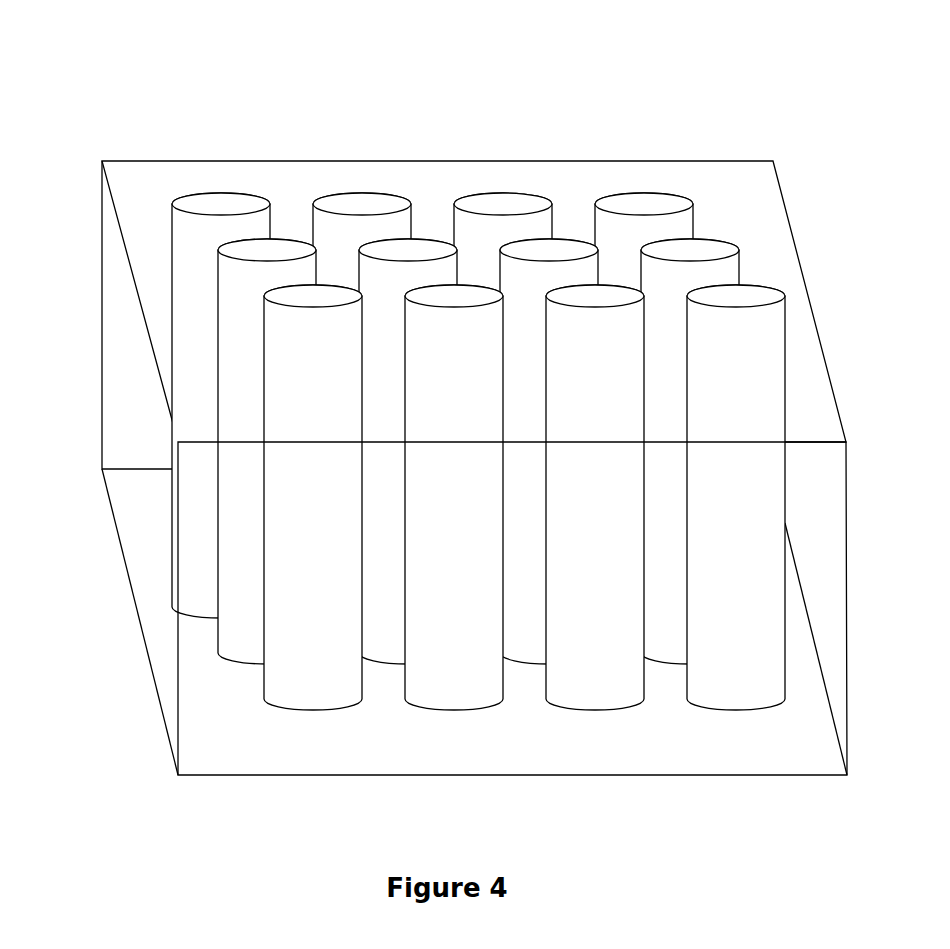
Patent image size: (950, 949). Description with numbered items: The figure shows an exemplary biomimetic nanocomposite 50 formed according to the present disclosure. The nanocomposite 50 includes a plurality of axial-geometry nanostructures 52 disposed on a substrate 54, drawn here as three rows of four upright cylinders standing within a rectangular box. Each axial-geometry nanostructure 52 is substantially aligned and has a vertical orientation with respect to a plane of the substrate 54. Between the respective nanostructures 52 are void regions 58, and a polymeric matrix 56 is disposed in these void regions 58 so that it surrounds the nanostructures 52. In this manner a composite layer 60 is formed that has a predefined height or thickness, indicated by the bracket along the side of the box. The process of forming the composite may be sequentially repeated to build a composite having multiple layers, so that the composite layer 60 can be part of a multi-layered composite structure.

The nanocomposite 50 is at (467, 426).
The axial-geometry nanostructures 52 is at (503, 197).
The substrate 54 is at (242, 752).
The polymeric matrix 56 is at (807, 386).
The void regions 58 is at (335, 260).
The composite layer 60 is at (66, 315).